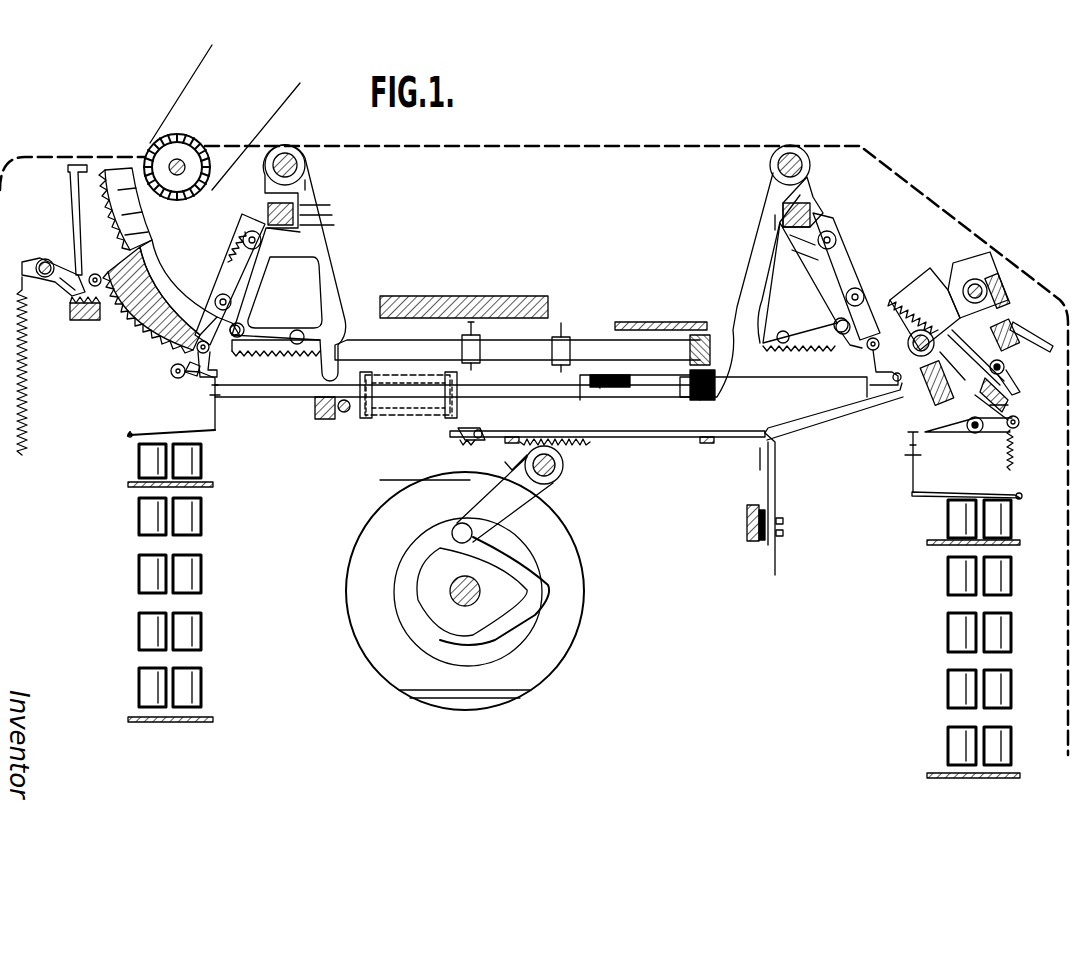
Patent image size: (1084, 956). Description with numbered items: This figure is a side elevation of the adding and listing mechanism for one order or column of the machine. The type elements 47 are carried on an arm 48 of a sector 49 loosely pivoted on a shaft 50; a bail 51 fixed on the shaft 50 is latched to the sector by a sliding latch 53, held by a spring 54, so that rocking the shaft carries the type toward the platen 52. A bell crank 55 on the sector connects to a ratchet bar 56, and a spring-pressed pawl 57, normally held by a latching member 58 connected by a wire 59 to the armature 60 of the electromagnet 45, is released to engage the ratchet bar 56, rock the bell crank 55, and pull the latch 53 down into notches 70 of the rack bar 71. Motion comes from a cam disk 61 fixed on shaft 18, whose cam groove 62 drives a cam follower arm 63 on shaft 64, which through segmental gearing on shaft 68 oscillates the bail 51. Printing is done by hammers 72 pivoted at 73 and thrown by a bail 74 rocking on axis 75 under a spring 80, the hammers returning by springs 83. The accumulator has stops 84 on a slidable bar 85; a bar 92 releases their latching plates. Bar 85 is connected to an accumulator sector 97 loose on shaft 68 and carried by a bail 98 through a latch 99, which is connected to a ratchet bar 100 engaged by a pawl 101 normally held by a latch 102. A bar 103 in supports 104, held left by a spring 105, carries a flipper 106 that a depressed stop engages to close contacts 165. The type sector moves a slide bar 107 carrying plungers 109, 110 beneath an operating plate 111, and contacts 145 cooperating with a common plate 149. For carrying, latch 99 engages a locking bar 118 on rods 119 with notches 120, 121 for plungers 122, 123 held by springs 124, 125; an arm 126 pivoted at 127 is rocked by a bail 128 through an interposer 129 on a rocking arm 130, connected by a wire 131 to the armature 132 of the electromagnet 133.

The shaft 18 is at (470, 595).
The electromagnet 45 is at (240, 590).
The type elements 47 is at (150, 213).
The arm 48 is at (170, 283).
The sector 49 is at (330, 265).
The shaft 50 is at (300, 170).
The bail 51 is at (298, 232).
The platen 52 is at (193, 148).
The sliding latch 53 is at (245, 285).
The spring 54 is at (228, 262).
The bell crank 55 is at (244, 322).
The ratchet bar 56 is at (262, 357).
The spring-pressed pawl 57 is at (212, 356).
The latching member 58 is at (205, 380).
The wire 59 is at (212, 416).
The armature 60 is at (162, 432).
The cam disk 61 is at (580, 585).
The cam groove 62 is at (505, 550).
The cam follower arm 63 is at (485, 505).
The shaft 64 is at (563, 468).
The shaft 68 is at (768, 168).
The notches 70 is at (190, 363).
The rack bar 71 is at (155, 305).
The hammers 72 is at (70, 185).
The pivot 73 is at (97, 273).
The bail 74 is at (60, 270).
The axis 75 is at (37, 263).
The spring 80 is at (26, 393).
The springs 83 is at (72, 305).
The stops 84 is at (460, 376).
The bar 85 is at (487, 390).
The bar 92 is at (345, 414).
The accumulator sector 97 is at (758, 240).
The bail 98 is at (812, 193).
The latch 99 is at (858, 270).
The ratchet bar 100 is at (800, 352).
The pawl 101 is at (855, 350).
The latch 102 is at (870, 388).
The bar 103 is at (652, 438).
The supports 104 is at (506, 444).
The spring 105 is at (578, 445).
The spring pressed flipper 106 is at (460, 432).
The slide bar 107 is at (390, 345).
The plunger 109 is at (474, 325).
The plunger 110 is at (565, 328).
The operating plate 111 is at (455, 300).
The locking bar 118 is at (948, 290).
The rods 119 is at (980, 279).
The notch 120 is at (945, 356).
The notch 121 is at (1002, 285).
The plunger 122 is at (950, 385).
The plunger 123 is at (1030, 313).
The spring 124 is at (920, 422).
The spring 125 is at (1012, 366).
The arm 126 is at (1018, 382).
The pivot 127 is at (1012, 398).
The bail 128 is at (1000, 408).
The interposer 129 is at (1019, 421).
The rocking arm 130 is at (990, 435).
The wire 131 is at (918, 463).
The armature 132 is at (945, 492).
The electromagnet 133 is at (1012, 518).
The contacts 145 is at (715, 330).
The common plate 149 is at (665, 325).
The contacts 165 is at (778, 452).